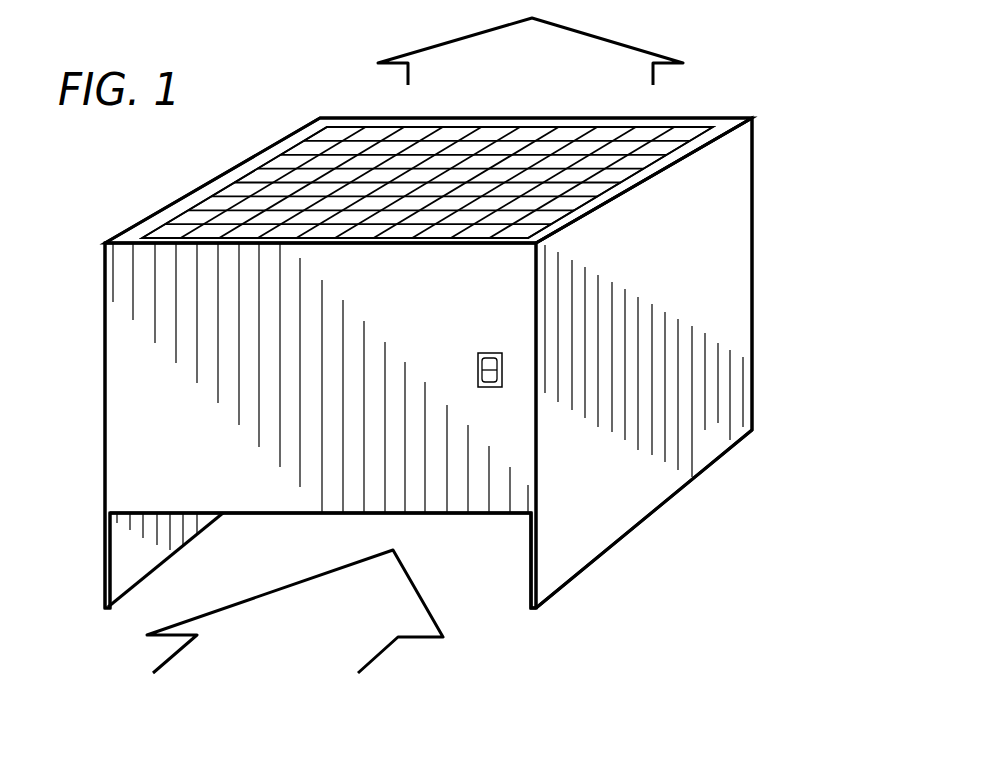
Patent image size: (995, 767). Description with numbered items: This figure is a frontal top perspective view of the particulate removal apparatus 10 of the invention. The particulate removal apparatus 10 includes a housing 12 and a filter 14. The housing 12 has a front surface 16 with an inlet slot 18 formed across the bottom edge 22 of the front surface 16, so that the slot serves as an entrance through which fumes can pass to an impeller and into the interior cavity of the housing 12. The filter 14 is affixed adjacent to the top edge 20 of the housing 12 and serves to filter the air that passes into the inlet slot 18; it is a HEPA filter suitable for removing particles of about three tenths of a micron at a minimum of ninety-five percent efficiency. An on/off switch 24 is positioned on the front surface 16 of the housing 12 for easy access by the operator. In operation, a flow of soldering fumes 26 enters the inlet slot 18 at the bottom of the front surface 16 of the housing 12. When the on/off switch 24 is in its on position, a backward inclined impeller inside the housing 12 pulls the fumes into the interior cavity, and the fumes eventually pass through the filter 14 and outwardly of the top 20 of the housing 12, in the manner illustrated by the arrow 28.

The particulate removal apparatus 10 is at (697, 493).
The housing 12 is at (737, 258).
The filter 14 is at (663, 127).
The front surface 16 is at (122, 393).
The inlet slot 18 is at (482, 595).
The top edge 20 is at (172, 204).
The bottom edge 22 is at (103, 608).
The on/off switch 24 is at (480, 362).
The flow of soldering fumes 26 is at (310, 658).
The arrow 28 is at (628, 60).